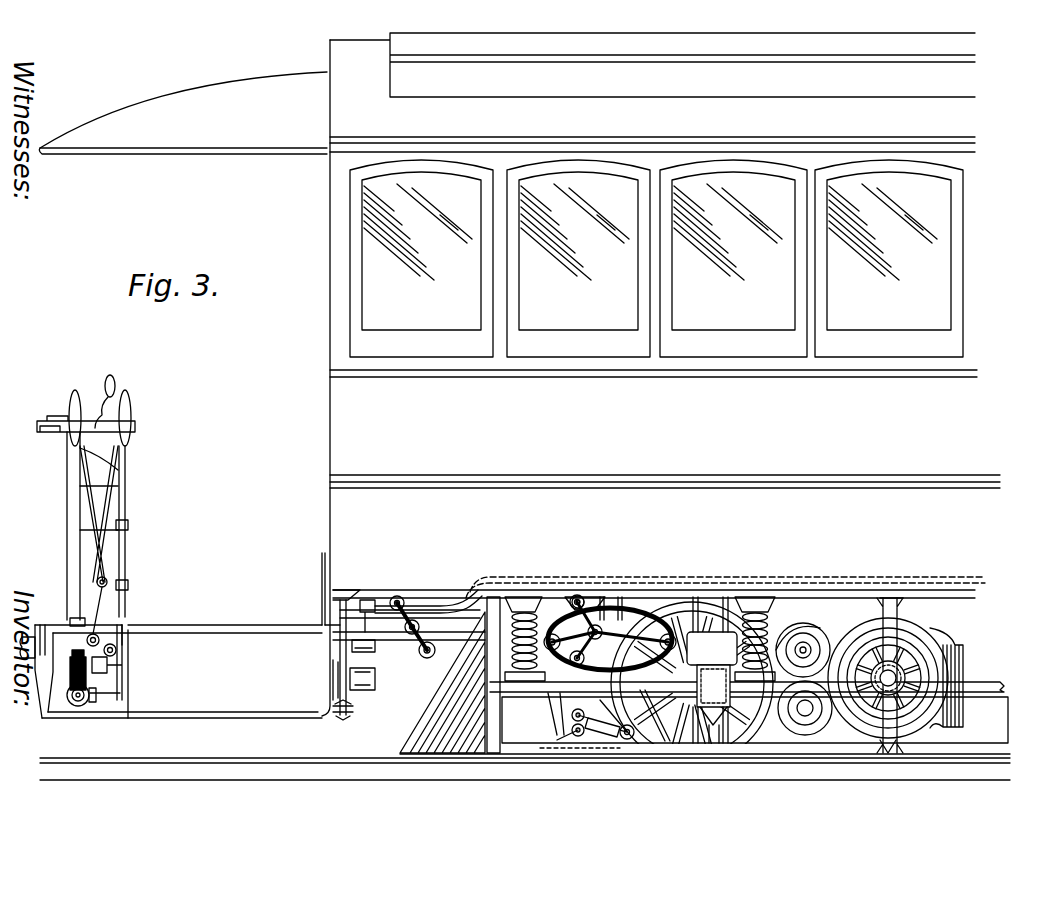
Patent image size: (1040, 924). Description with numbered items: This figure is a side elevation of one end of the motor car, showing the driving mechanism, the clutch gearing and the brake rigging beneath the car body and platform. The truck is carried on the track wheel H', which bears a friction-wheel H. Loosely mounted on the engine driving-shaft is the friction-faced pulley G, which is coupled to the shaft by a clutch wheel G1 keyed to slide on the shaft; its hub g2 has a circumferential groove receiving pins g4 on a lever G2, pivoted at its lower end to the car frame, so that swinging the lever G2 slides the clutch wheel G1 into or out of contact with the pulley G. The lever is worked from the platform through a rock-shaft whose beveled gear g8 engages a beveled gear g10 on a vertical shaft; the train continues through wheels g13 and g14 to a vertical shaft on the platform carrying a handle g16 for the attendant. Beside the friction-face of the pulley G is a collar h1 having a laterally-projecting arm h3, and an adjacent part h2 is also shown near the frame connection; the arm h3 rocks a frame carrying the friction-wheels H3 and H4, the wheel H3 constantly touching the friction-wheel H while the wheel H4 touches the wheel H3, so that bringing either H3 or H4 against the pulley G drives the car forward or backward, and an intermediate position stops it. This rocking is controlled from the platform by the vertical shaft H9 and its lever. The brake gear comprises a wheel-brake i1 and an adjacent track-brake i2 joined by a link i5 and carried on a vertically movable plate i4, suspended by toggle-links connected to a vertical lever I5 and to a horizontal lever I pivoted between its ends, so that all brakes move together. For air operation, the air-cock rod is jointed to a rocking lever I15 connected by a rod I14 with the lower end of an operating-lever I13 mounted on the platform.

The handle g16 is at (116, 384).
The operating-lever I13 is at (76, 487).
The vertical shaft H9 is at (56, 536).
The vertical lever I5 is at (108, 534).
The gear wheel g14 is at (78, 707).
The gear wheel g13 is at (96, 703).
The beveled gear g10 is at (352, 712).
The beveled gear g8 is at (356, 611).
The rod I14 is at (388, 652).
The rocking lever I15 is at (427, 656).
The horizontal lever I is at (650, 592).
The track-brake i2 is at (610, 630).
The plate i4 is at (577, 703).
The wheel-brake i1 is at (557, 741).
The link i5 is at (617, 735).
The brake lever i is at (633, 736).
The wheel Hp is at (668, 741).
The friction-wheel H is at (750, 724).
The friction-wheel H3 is at (810, 727).
The friction-wheel H4 is at (803, 634).
The laterally-projecting arm h3 is at (823, 640).
The frame connection h2 is at (897, 614).
The pulley G is at (906, 652).
The hub g2 is at (900, 667).
The pin g4 is at (915, 676).
The collar h1 is at (945, 708).
The clutch wheel G1 is at (881, 710).
The lever G2 is at (900, 728).